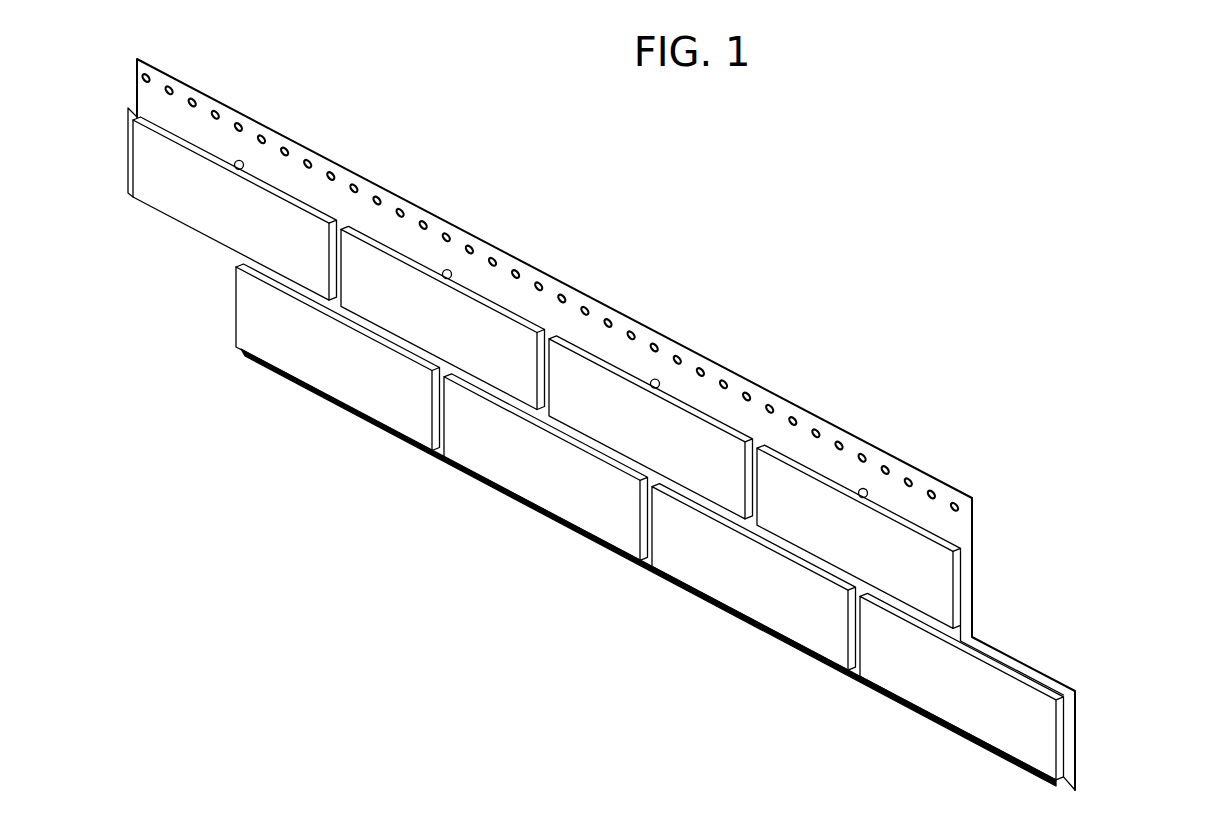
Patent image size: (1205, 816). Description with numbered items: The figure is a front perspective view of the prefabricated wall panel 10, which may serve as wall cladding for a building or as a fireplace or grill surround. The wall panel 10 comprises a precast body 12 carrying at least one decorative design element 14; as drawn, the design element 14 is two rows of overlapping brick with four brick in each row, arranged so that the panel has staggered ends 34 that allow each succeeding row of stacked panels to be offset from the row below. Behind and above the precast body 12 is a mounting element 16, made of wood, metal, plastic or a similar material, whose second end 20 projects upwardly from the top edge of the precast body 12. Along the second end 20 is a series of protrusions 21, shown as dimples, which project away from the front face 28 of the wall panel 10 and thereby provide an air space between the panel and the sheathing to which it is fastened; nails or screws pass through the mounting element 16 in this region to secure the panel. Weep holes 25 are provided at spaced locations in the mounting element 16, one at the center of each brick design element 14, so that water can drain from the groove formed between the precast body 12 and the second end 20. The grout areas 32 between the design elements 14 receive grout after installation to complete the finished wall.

The prefabricated wall panel 10 is at (774, 256).
The precast body 12 is at (965, 593).
The decorative design element 14 is at (224, 228).
The mounting element 16 is at (912, 497).
The second end of the mounting element 20 is at (975, 521).
The protrusions (dimples) 21 is at (378, 196).
The weep holes 25 is at (242, 160).
The front face 28 is at (752, 595).
The grout areas 32 is at (373, 503).
The staggered ends 34 is at (138, 253).